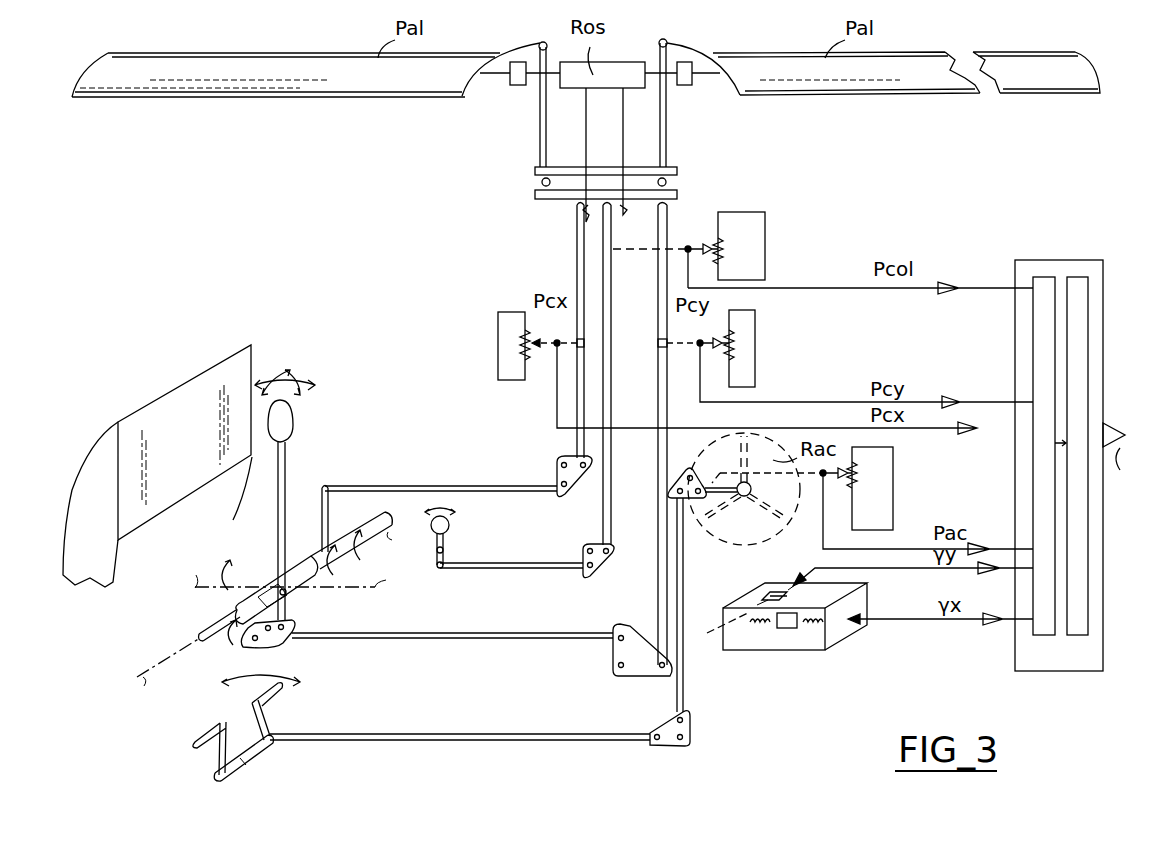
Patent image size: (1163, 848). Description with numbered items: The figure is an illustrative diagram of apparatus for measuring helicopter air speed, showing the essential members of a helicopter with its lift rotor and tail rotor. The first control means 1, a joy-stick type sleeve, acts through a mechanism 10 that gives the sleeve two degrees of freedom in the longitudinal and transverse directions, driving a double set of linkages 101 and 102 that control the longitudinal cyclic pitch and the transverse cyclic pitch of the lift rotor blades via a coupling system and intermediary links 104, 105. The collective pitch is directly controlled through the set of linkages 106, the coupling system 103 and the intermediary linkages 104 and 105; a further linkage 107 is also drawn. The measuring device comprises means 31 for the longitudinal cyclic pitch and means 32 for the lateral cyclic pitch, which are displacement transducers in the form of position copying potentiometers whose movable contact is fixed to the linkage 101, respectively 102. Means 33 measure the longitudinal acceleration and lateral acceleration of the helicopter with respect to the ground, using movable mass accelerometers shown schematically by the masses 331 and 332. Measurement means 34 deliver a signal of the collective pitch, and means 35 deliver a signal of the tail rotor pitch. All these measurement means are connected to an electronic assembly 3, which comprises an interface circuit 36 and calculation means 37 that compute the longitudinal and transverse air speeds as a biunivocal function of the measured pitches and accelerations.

The first control means 1 is at (293, 462).
The electronic assembly 3 is at (1069, 436).
The mechanism 10 is at (318, 578).
The means for measuring the longitudinal cyclic pitch 31 is at (498, 352).
The means for measurement of the lateral cyclic pitch 32 is at (755, 343).
The means for measuring longitudinal and lateral acceleration 33 is at (785, 629).
The measurement means of the collective pitch 34 is at (742, 222).
The means for measurement of the tail rotor pitch 35 is at (893, 478).
The interface circuit 36 is at (1048, 290).
The calculation means 37 is at (1080, 290).
The linkage for longitudinal cyclic pitch 101 is at (488, 488).
The linkage for transverse cyclic pitch 102 is at (492, 634).
The coupling system 103 is at (532, 182).
The intermediary link 104 is at (540, 135).
The intermediary link 105 is at (668, 123).
The set of linkages for collective pitch 106 is at (603, 270).
The yaw pedal control rod 107 is at (520, 748).
The mass 331 is at (790, 630).
The mass 332 is at (770, 595).